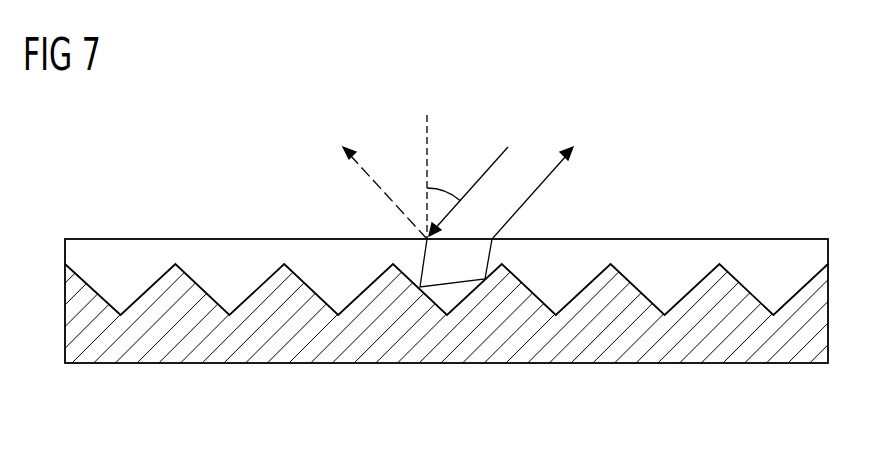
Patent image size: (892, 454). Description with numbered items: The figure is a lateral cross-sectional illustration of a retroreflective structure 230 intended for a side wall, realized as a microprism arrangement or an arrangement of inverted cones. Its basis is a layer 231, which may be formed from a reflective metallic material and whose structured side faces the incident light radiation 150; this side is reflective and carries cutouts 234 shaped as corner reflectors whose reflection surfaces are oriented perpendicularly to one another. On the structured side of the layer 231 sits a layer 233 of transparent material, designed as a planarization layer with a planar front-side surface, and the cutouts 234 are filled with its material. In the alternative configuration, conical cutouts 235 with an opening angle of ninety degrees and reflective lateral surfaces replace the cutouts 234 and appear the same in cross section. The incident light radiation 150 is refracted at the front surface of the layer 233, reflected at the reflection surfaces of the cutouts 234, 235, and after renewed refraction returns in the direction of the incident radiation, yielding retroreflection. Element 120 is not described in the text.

The light guide 120 is at (446, 257).
The retroreflective structure 230 is at (446, 257).
The layer 231 is at (250, 348).
The layer 233 is at (172, 252).
The cutouts 234 is at (446, 247).
The conical cutouts 235 is at (446, 247).
The light radiation 150 is at (487, 170).